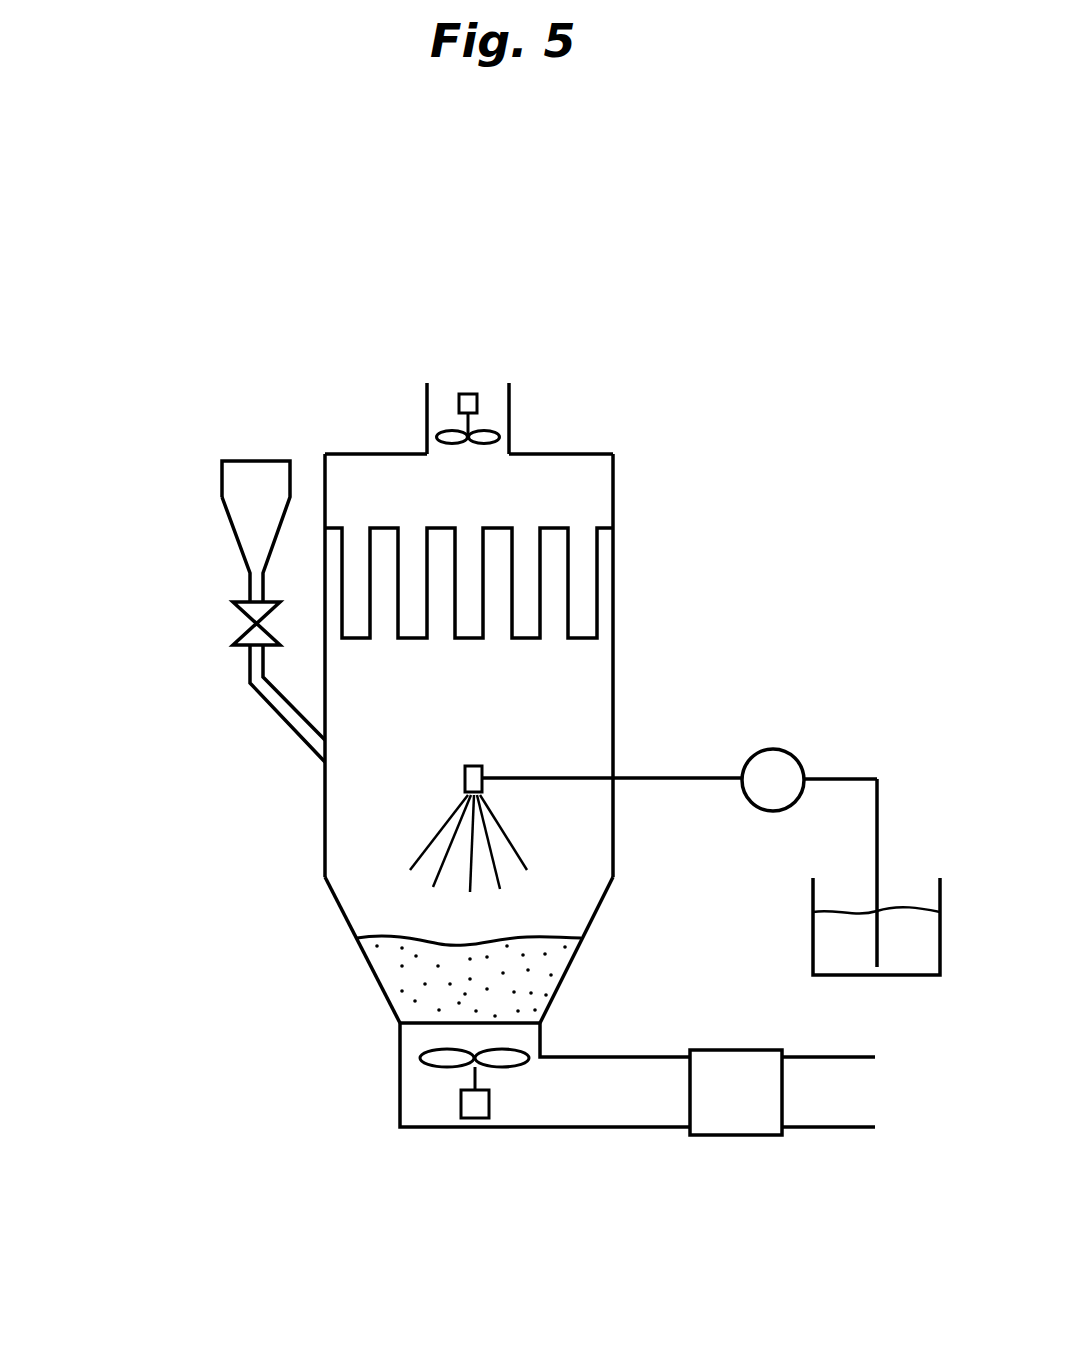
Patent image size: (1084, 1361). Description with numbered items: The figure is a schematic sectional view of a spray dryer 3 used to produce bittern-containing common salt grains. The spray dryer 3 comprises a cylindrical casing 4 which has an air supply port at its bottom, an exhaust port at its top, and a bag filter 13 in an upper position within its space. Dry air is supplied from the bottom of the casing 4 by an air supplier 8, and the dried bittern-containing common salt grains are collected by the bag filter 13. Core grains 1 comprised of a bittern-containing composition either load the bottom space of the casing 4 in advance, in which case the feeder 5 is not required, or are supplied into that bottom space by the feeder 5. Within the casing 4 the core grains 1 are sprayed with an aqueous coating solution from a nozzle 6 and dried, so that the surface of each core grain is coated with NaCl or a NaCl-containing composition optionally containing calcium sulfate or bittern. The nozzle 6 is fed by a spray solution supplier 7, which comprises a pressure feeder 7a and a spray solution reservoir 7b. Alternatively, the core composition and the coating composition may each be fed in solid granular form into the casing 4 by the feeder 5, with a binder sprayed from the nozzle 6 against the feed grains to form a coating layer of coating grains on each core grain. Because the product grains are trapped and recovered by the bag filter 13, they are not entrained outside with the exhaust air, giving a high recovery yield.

The core grains 1 is at (375, 958).
The spray dryer 3 is at (673, 296).
The casing 4 is at (613, 690).
The feeder 5 is at (198, 582).
The nozzle 6 is at (470, 765).
The spray solution supplier 7 is at (888, 733).
The pressure feeder 7a is at (750, 803).
The spray solution reservoir 7b is at (913, 955).
The air supplier 8 is at (420, 1097).
The bag filter 13 is at (578, 518).